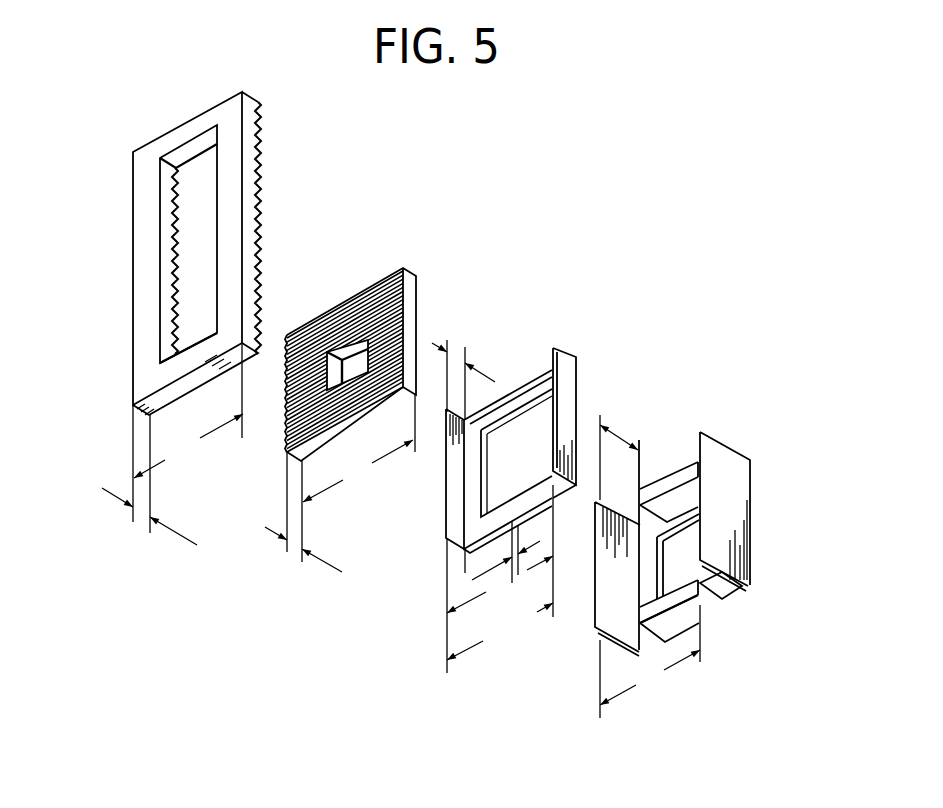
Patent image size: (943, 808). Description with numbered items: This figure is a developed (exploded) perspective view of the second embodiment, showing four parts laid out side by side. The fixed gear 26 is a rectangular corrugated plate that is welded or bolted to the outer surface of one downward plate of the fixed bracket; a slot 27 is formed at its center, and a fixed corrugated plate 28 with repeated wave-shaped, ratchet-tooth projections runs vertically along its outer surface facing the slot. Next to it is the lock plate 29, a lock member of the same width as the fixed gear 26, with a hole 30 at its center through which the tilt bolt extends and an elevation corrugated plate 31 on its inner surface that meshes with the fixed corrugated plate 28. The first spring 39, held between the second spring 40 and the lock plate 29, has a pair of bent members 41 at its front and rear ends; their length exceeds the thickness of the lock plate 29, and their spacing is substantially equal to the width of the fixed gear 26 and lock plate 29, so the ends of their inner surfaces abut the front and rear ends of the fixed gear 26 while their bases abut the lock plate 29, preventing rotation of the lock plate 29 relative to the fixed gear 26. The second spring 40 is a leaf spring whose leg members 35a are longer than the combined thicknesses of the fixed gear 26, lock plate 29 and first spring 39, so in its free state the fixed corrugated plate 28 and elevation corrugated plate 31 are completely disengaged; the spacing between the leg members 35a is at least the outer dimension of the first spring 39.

The fixed gear 26 is at (148, 152).
The slot 27 is at (160, 213).
The fixed corrugated plate 28 is at (258, 213).
The lock plate 29 is at (345, 400).
The hole 30 is at (346, 348).
The elevation corrugated plate 31 is at (387, 282).
The first spring 39 is at (535, 378).
The bent members 41 is at (582, 349).
The leg members 35a is at (718, 453).
The second spring 40 is at (704, 550).